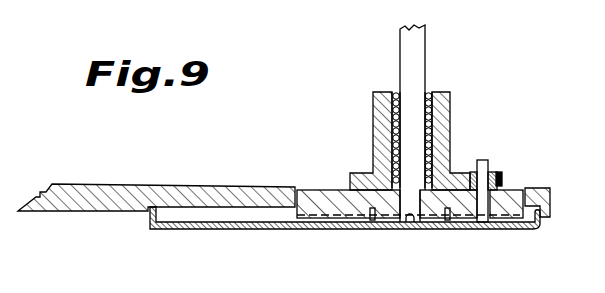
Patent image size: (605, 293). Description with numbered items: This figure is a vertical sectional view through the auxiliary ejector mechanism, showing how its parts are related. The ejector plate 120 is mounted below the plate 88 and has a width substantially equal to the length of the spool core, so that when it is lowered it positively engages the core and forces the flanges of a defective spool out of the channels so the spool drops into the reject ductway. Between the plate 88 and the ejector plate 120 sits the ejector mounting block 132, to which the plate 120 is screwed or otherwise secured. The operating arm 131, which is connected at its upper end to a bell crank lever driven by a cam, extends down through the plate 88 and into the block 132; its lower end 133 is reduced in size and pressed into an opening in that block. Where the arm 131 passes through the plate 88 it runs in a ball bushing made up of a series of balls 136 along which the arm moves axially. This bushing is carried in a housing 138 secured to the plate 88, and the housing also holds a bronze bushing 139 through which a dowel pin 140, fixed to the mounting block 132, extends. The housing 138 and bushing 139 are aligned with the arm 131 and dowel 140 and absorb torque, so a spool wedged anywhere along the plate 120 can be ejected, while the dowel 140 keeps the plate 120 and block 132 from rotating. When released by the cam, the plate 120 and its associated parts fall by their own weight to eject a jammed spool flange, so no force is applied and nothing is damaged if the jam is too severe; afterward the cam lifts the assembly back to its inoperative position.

The plate 88 is at (227, 194).
The ejector plate 120 is at (286, 229).
The operating arm 131 is at (405, 58).
The ejector mounting block 132 is at (356, 204).
The lower end of arm 133 is at (412, 223).
The balls 136 is at (432, 138).
The housing 138 is at (438, 110).
The bronze bushing 139 is at (493, 176).
The dowel pin 140 is at (482, 160).